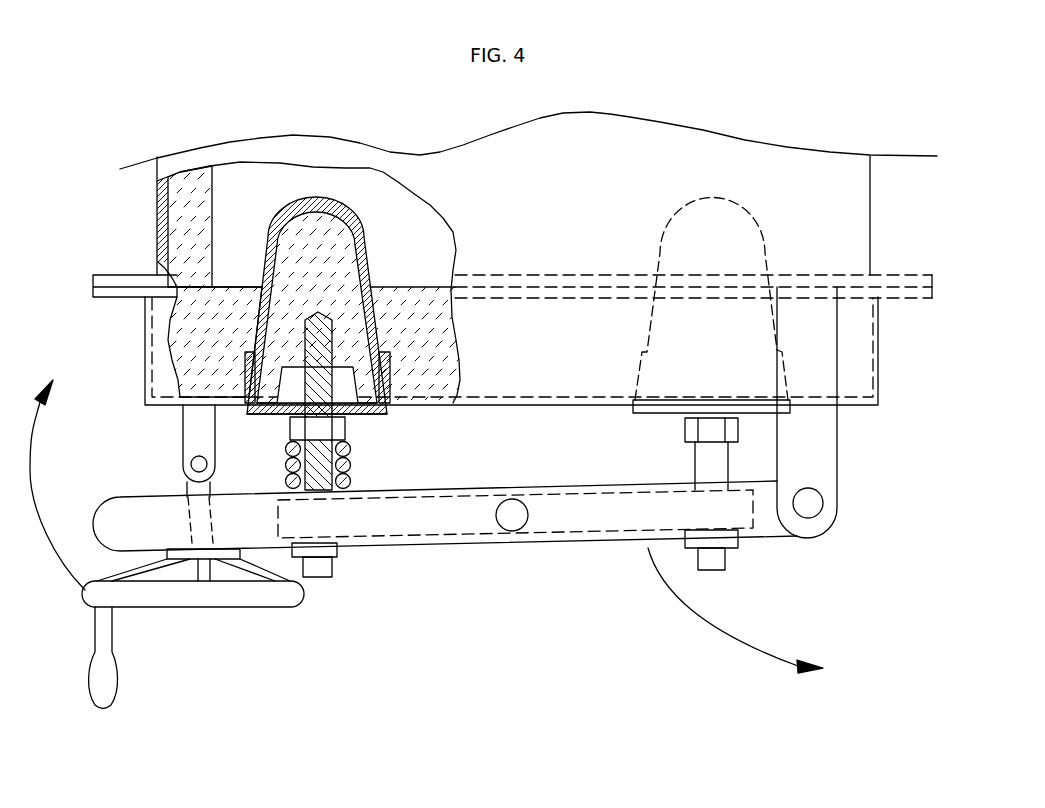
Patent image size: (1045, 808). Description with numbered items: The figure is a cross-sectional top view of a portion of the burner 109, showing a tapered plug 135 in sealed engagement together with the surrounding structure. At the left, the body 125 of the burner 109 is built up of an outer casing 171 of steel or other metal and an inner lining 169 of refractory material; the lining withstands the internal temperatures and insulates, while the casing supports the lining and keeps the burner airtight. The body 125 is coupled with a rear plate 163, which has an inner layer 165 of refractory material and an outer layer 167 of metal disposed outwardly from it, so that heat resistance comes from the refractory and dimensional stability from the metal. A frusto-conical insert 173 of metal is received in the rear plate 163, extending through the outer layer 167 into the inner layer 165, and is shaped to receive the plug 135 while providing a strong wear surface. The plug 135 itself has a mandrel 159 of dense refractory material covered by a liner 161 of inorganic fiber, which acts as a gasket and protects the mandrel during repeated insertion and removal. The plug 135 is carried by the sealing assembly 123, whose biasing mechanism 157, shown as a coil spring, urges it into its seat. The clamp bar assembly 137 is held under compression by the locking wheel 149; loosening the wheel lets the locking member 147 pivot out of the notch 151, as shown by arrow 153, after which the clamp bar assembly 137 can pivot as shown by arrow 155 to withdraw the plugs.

The burner 109 is at (845, 112).
The sealing assembly 123 is at (848, 580).
The body 125 is at (870, 186).
The plug 135 is at (381, 339).
The clamp bar assembly 137 is at (858, 543).
The locking member 147 is at (187, 488).
The locking wheel 149 is at (223, 607).
The notch 151 is at (213, 513).
The arrow 153 is at (31, 476).
The arrow 155 is at (676, 604).
The biasing mechanism 157 is at (350, 468).
The mandrel 159 is at (333, 233).
The liner 161 is at (368, 190).
The rear plate 163 is at (878, 355).
The inner layer 165 is at (456, 248).
The outer layer 167 is at (433, 402).
The inner lining 169 is at (190, 184).
The outer casing 171 is at (156, 212).
The frusto-conical insert 173 is at (393, 378).